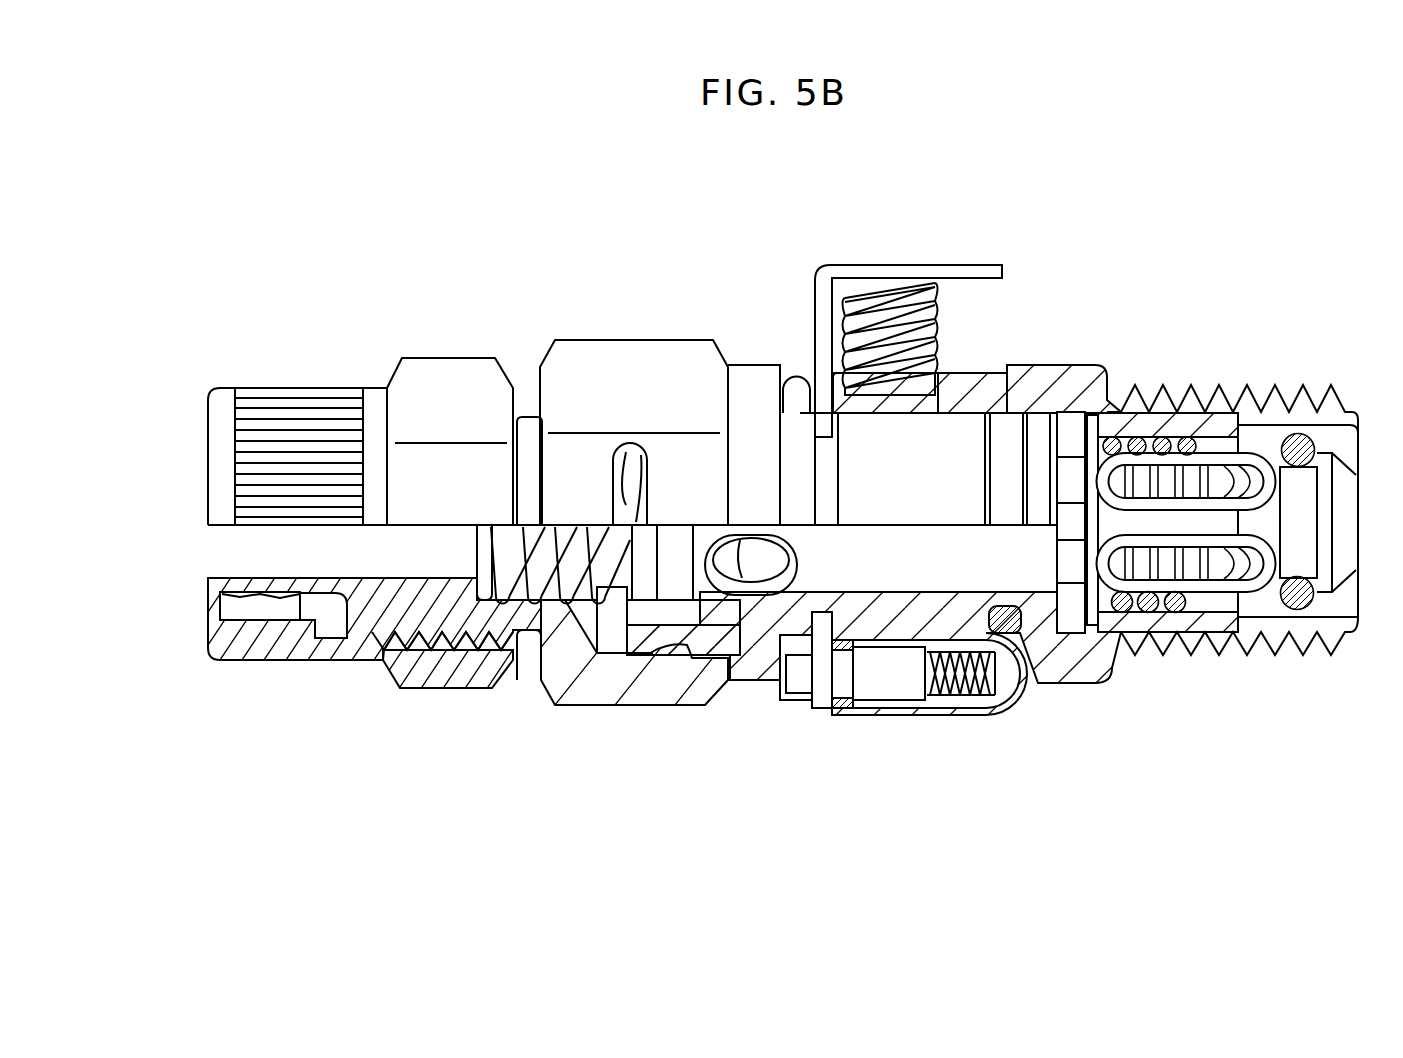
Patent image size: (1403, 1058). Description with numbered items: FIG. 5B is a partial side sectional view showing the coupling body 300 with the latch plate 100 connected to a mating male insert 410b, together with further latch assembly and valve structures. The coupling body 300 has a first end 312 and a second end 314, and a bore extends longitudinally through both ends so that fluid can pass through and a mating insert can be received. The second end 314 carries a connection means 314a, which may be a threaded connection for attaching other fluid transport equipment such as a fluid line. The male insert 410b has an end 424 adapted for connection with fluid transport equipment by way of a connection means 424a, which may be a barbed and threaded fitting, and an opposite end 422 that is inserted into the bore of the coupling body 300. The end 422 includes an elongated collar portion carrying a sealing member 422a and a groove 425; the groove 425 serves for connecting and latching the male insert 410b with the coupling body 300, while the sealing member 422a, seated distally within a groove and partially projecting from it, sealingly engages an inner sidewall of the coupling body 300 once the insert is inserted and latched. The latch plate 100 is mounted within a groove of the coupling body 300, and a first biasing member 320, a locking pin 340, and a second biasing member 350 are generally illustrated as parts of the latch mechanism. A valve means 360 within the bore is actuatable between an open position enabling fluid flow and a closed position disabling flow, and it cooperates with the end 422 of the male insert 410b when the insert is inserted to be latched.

The latch plate 100 is at (967, 267).
The coupling body 300 is at (1152, 305).
The first end 312 is at (795, 390).
The second end 314 is at (1330, 392).
The connection means 314a is at (1312, 620).
The first biasing member 320 is at (937, 345).
The locking pin 340 is at (790, 695).
The second biasing member 350 is at (950, 700).
The valve means 360 is at (1155, 605).
The male insert 410b is at (268, 388).
The end 422 is at (855, 636).
The sealing member 422a is at (1010, 632).
The end 424 is at (220, 655).
The connection means 424a is at (225, 598).
The groove 425 is at (817, 618).